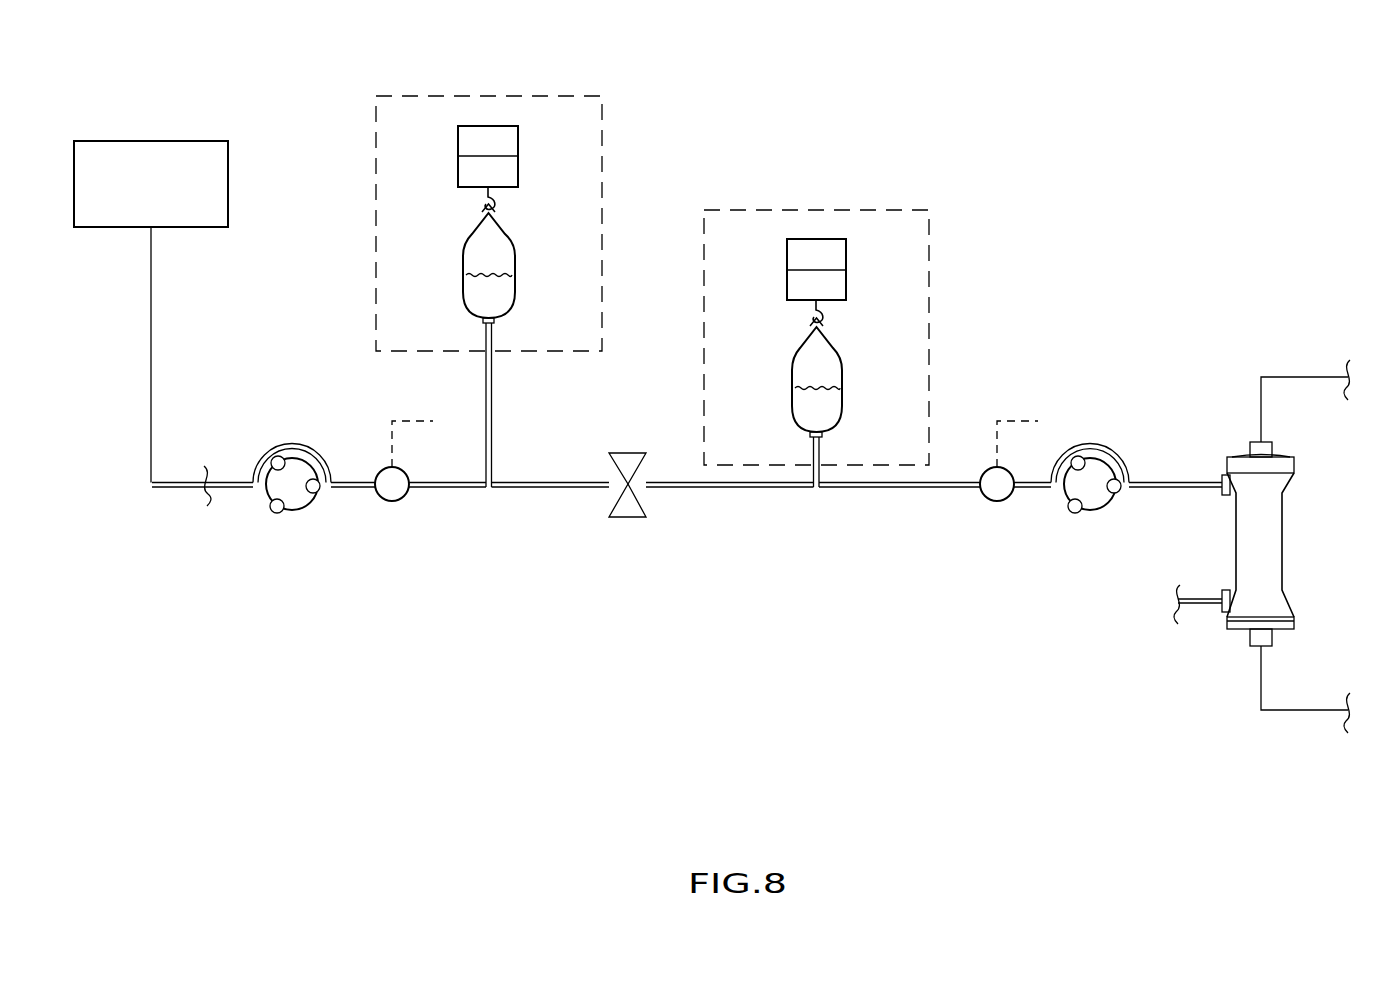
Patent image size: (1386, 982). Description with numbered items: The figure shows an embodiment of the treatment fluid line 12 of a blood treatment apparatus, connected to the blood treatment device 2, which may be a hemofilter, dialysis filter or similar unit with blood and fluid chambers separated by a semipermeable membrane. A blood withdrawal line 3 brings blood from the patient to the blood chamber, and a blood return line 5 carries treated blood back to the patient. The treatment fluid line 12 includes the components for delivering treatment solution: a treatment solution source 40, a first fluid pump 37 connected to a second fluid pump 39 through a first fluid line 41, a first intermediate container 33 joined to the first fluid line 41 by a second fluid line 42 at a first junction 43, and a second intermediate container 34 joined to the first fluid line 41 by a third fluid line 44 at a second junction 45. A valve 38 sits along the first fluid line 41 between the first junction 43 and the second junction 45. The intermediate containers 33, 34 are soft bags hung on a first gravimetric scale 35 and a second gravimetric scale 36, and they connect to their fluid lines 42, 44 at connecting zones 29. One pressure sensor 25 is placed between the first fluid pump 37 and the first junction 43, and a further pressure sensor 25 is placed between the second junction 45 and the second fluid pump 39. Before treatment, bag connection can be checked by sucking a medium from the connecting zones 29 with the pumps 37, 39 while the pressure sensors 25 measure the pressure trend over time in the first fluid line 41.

The blood treatment device 2 is at (1296, 548).
The blood withdrawal line 3 is at (1295, 711).
The blood return line 5 is at (1288, 377).
The treatment fluid line 12 is at (703, 525).
The pressure sensor 25 is at (385, 502).
The connecting zone 29 is at (612, 96).
The first intermediate container 33 is at (474, 231).
The second intermediate container 34 is at (806, 352).
The first gravimetric scale 35 is at (502, 126).
The second gravimetric scale 36 is at (828, 239).
The first fluid pump 37 is at (300, 510).
The valve 38 is at (627, 507).
The second fluid pump 39 is at (1104, 510).
The treatment solution source 40 is at (166, 199).
The first fluid line 41 is at (540, 489).
The second fluid line 42 is at (492, 392).
The first junction 43 is at (487, 489).
The third fluid line 44 is at (820, 450).
The second junction 45 is at (817, 489).